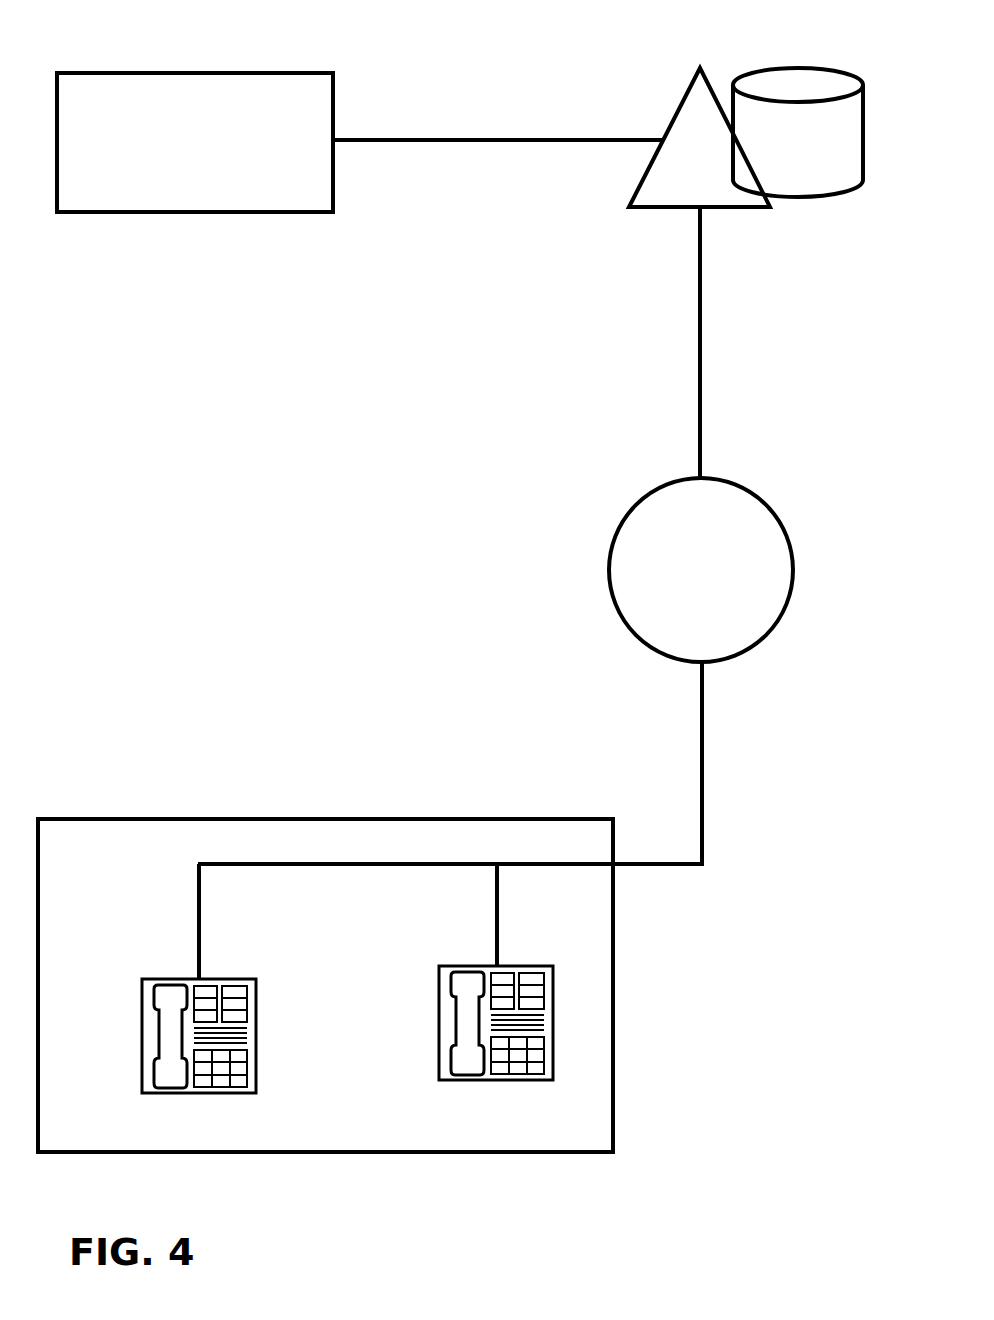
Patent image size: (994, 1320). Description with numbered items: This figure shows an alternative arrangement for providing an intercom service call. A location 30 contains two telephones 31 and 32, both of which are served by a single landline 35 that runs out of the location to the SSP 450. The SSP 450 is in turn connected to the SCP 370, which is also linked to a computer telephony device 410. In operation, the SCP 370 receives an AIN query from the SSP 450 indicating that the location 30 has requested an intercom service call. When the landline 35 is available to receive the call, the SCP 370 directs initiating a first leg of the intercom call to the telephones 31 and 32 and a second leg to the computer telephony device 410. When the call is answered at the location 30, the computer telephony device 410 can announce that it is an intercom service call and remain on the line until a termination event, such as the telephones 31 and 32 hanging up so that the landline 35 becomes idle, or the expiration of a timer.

The computer telephony device 410 is at (287, 70).
The SCP 370 is at (687, 90).
The SSP 450 is at (766, 501).
The landline 35 is at (705, 790).
The location 30 is at (107, 819).
The telephone 31 is at (141, 1032).
The telephone 32 is at (438, 1030).